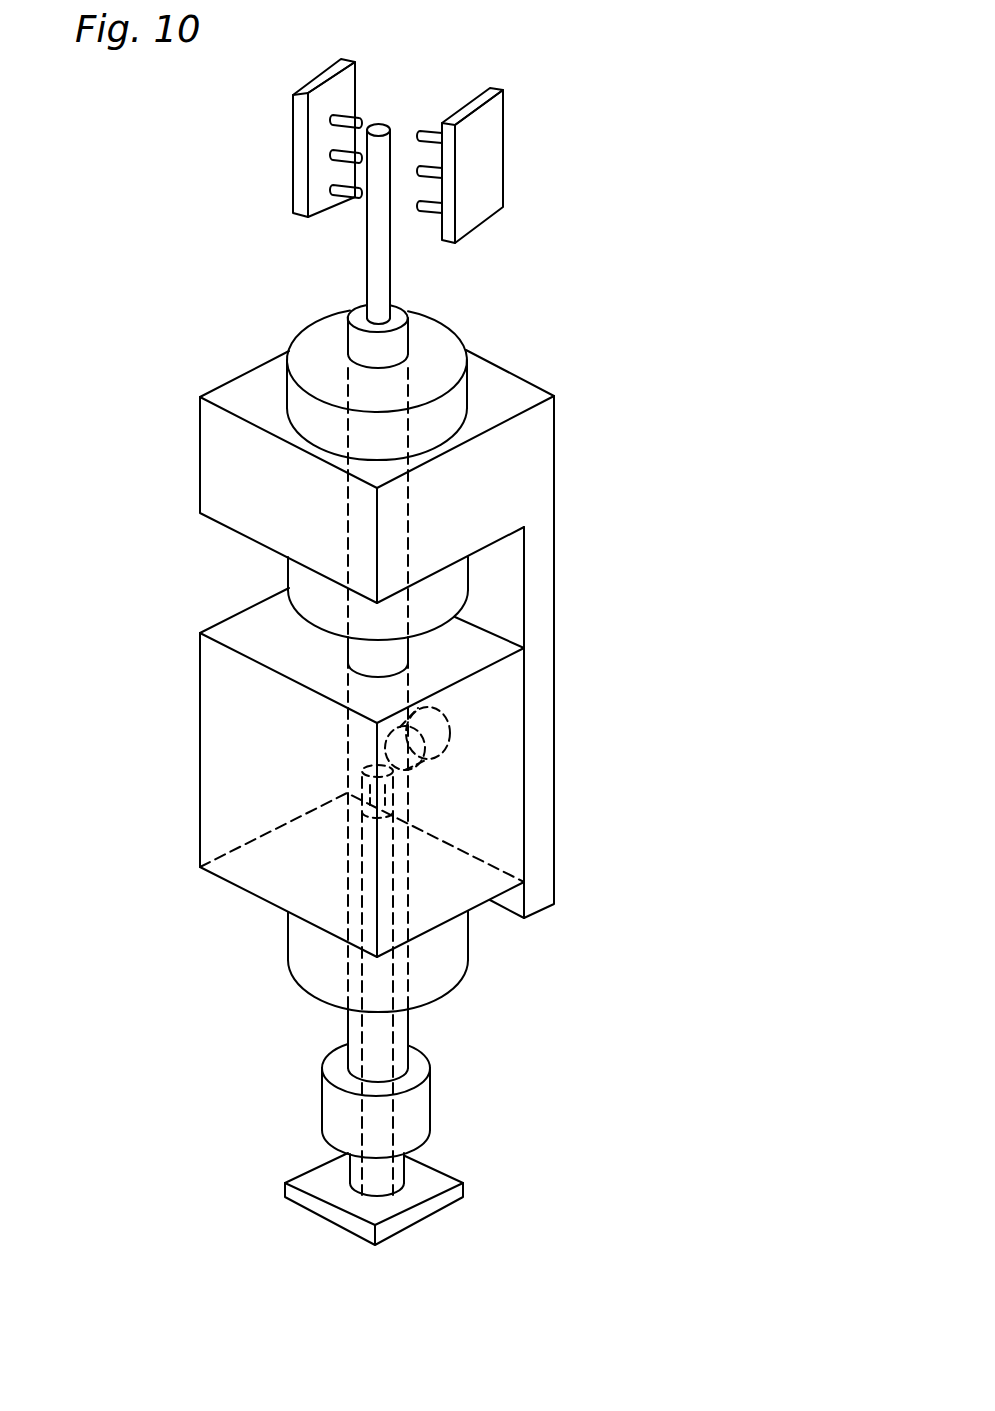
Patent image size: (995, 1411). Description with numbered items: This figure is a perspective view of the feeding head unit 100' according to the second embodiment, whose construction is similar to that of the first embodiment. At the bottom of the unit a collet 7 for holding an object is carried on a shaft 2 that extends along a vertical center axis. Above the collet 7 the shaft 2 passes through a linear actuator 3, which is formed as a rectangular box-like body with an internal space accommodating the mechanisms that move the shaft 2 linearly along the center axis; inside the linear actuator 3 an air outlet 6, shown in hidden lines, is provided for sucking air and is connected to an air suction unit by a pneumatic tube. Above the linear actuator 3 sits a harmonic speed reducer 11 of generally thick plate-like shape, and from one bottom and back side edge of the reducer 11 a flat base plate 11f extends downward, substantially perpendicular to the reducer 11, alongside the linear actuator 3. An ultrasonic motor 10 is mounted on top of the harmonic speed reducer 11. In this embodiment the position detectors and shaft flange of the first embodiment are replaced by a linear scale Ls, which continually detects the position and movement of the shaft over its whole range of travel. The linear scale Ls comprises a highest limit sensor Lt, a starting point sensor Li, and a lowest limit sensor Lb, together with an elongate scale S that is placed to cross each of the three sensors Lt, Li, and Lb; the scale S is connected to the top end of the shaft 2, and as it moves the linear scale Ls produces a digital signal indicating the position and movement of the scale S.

The feeding head unit 100' is at (439, 631).
The scale S is at (390, 265).
The linear scale Ls is at (636, 112).
The highest limit sensor Lt is at (432, 132).
The starting point sensor Li is at (430, 173).
The lowest limit sensor Lb is at (427, 205).
The ultrasonic motor 10 is at (310, 348).
The harmonic speed reducer 11 is at (238, 443).
The base plate 11f is at (545, 600).
The linear actuator 3 is at (235, 725).
The air outlet 6 is at (443, 743).
The shaft 2 is at (343, 1032).
The collet 7 is at (322, 1183).